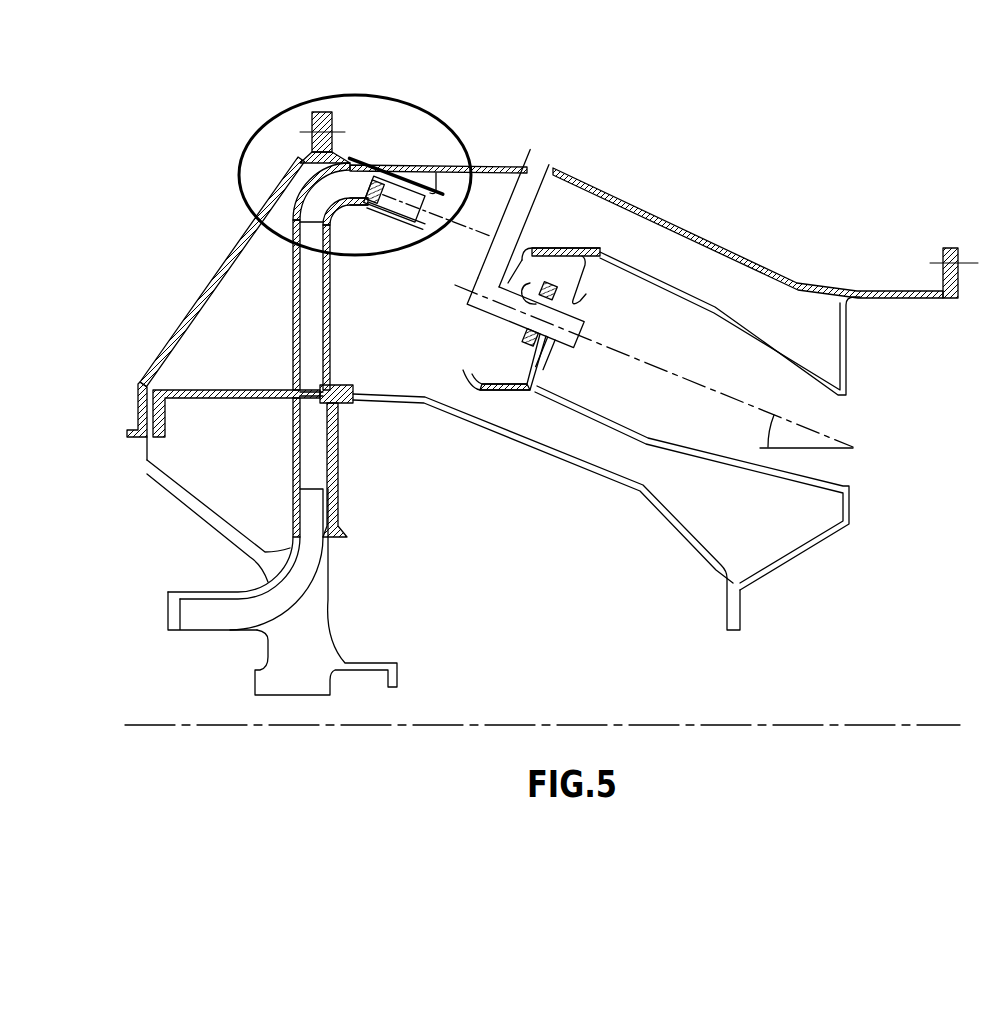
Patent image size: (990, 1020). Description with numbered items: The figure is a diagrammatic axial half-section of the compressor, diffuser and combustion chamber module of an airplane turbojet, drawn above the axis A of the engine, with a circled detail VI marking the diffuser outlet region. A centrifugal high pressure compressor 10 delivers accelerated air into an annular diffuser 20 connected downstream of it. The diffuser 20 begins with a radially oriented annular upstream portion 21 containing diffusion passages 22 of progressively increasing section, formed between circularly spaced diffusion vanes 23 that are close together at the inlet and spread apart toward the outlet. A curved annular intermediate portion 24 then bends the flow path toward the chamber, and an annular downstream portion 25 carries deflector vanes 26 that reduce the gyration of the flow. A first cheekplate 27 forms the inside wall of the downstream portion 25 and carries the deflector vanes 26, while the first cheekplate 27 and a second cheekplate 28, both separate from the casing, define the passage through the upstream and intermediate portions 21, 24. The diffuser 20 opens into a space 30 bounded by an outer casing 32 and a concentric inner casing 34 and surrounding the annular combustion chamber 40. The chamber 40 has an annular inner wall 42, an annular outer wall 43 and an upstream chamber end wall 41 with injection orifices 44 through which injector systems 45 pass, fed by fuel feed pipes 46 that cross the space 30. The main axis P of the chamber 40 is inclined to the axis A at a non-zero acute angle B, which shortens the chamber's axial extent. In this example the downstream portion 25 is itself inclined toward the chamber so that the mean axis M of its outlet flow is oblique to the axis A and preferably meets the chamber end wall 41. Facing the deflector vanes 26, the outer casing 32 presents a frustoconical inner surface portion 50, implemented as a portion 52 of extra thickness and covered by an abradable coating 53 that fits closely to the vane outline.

The centrifugal high pressure compressor 10 is at (220, 567).
The annular diffuser 20 is at (302, 180).
The annular upstream portion 21 is at (290, 320).
The diffusion passages 22 is at (313, 322).
The diffusion vanes 23 is at (310, 223).
The curved annular intermediate portion 24 is at (293, 202).
The annular downstream portion 25 is at (395, 223).
The deflector vanes 26 is at (368, 200).
The first cheekplate 27 is at (330, 297).
The second cheekplate 28 is at (293, 282).
The space 30 is at (407, 322).
The outer casing 32 is at (666, 228).
The inner casing 34 is at (583, 467).
The annular combustion chamber 40 is at (629, 343).
The chamber end wall 41 is at (583, 283).
The annular inner wall 42 is at (690, 453).
The annular outer wall 43 is at (717, 311).
The injection orifices 44 is at (577, 345).
The injector systems 45 is at (490, 333).
The fuel feed pipes 46 is at (524, 210).
The frustoconical inner surface portion 50 is at (425, 223).
The portion of extra thickness 52 is at (420, 170).
The abradable coating 53 is at (410, 178).
The axis of the turbojet A is at (845, 722).
The mean axis of the flow passage M is at (436, 225).
The main axis of the combustion chamber P is at (703, 385).
The acute angle B is at (801, 431).
The detail VI is at (245, 145).